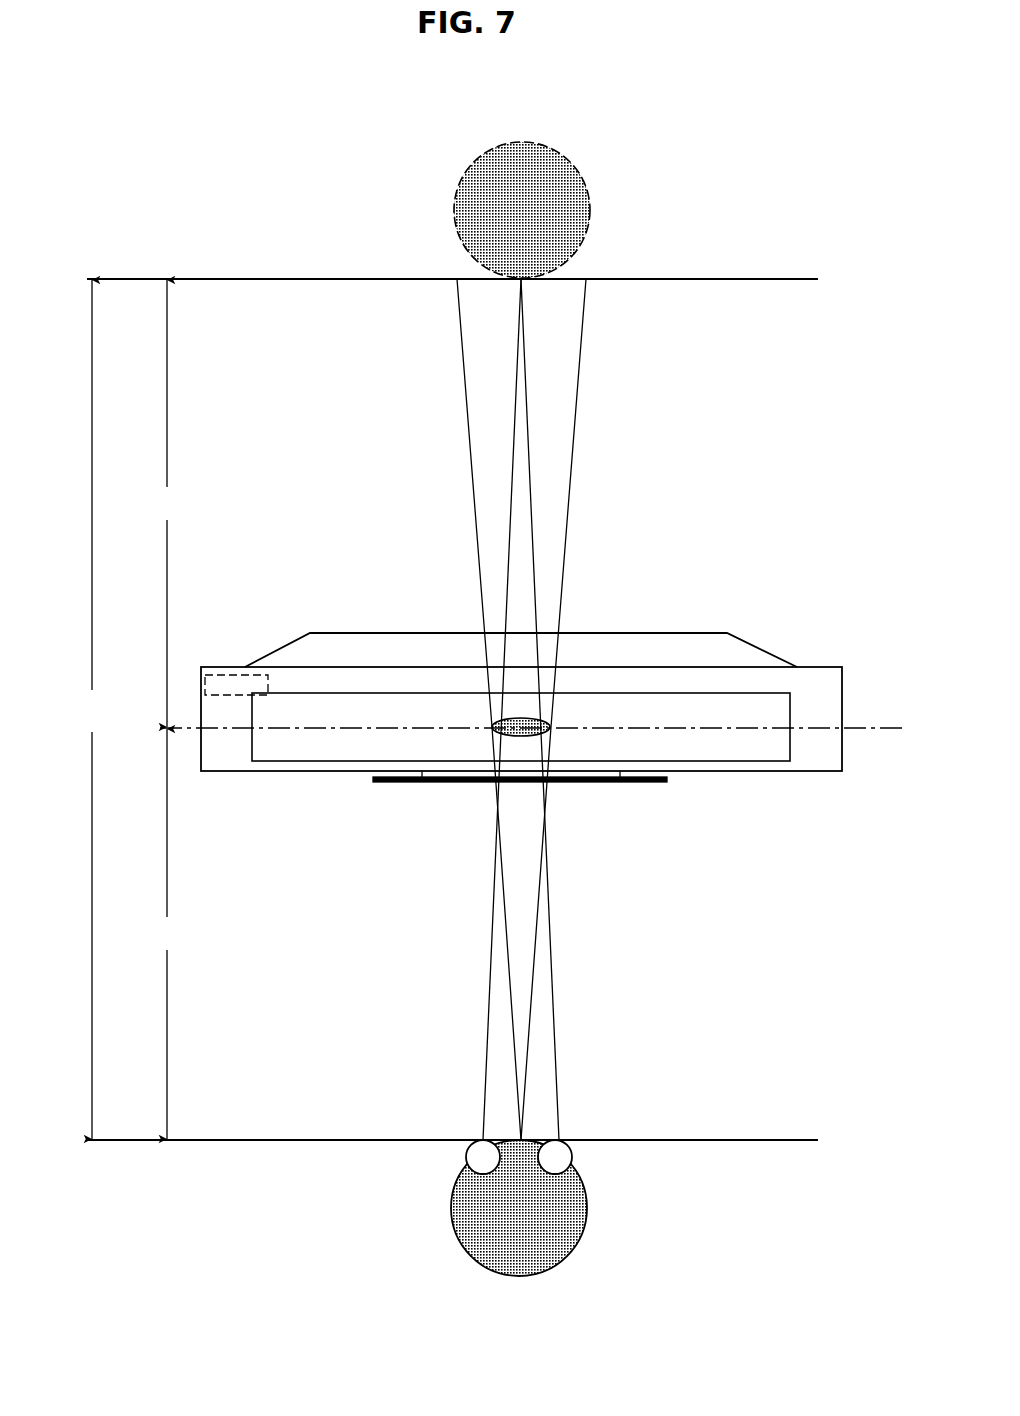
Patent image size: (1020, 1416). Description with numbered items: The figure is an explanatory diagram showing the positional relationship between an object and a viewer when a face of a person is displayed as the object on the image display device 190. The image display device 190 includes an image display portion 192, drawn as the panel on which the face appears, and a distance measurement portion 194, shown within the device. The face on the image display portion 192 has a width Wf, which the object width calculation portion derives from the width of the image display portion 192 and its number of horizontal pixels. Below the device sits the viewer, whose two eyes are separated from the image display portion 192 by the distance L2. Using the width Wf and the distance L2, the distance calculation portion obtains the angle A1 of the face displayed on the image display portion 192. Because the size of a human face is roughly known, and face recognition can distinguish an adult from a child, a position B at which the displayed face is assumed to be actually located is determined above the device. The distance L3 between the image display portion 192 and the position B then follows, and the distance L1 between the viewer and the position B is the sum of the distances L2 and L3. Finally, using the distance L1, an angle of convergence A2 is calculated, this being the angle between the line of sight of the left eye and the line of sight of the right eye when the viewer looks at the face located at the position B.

The position at which the face is assumed to be located B is at (560, 152).
The angle of the face displayed on the image display portion A1 is at (510, 992).
The angle of convergence A2 is at (510, 537).
The distance between the viewer and position B L1 is at (91, 709).
The distance between the image display portion and the viewer L2 is at (166, 934).
The distance between the image display portion and position B L3 is at (166, 503).
The width of the face displayed on the image display portion Wf is at (492, 755).
The image display device 190 is at (765, 648).
The image display portion 192 is at (803, 772).
The distance measurement portion 194 is at (224, 675).